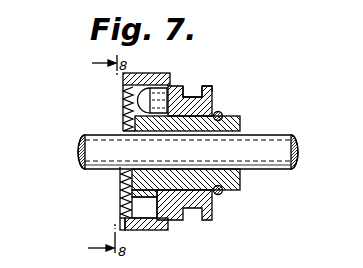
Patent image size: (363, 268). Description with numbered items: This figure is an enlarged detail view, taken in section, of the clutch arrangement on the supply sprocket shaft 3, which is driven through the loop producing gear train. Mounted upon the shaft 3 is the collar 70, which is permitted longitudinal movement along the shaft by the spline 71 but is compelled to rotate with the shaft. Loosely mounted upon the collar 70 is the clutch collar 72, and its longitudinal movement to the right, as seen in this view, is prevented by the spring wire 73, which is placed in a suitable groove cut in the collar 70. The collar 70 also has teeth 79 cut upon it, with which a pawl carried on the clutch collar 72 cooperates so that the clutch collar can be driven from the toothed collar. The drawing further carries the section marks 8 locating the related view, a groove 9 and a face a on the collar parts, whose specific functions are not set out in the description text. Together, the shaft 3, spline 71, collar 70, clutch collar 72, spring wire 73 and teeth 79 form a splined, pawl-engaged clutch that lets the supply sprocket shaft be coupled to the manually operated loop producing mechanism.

The supply sprocket shaft 3 is at (279, 166).
The threaded sleeve 8 is at (122, 207).
The groove 9 is at (192, 90).
The face a is at (203, 87).
The collar 70 is at (240, 189).
The spline 71 is at (246, 131).
The clutch collar 72 is at (223, 112).
The spring wire 73 is at (175, 86).
The teeth 79 is at (125, 111).